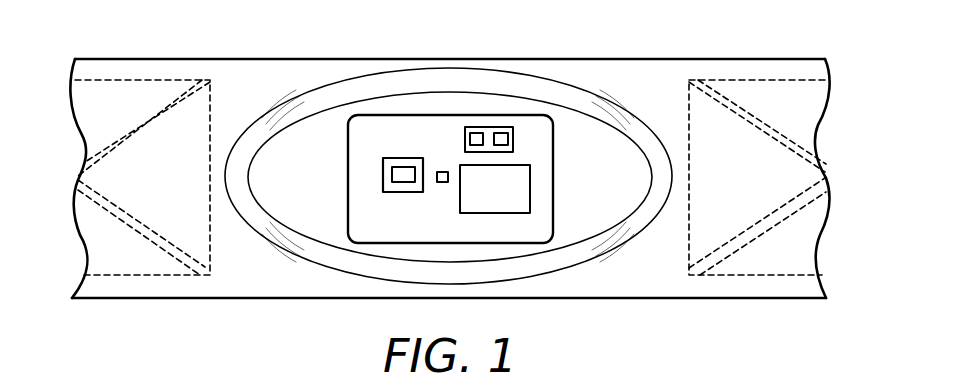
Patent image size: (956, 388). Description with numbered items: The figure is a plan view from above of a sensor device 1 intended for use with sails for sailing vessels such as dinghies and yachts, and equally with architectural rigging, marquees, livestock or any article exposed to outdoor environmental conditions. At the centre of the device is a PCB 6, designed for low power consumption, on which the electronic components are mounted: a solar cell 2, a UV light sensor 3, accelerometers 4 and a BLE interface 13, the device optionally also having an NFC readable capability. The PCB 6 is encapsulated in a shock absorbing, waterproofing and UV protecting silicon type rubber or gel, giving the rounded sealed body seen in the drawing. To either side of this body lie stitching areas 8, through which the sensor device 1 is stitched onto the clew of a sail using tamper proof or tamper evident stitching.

The sensor device 1 is at (599, 268).
The solar cell 2 is at (403, 192).
The UV light sensor 3 is at (443, 182).
The accelerometers 4 is at (477, 130).
The PCB 6 is at (553, 146).
The stitching areas 8 is at (134, 80).
The BLE interface 13 is at (530, 200).